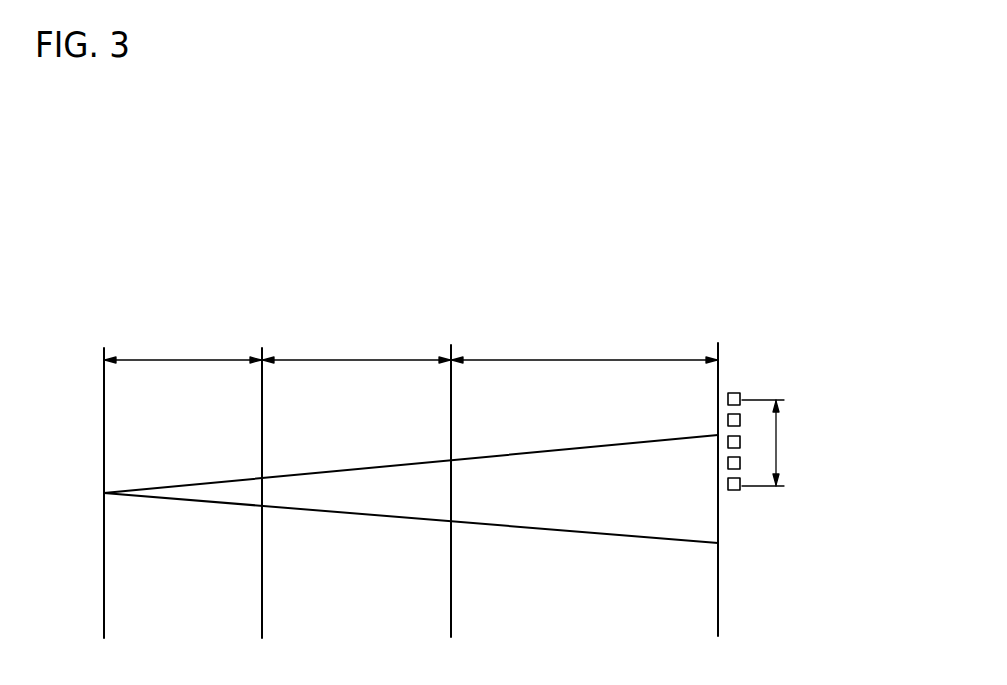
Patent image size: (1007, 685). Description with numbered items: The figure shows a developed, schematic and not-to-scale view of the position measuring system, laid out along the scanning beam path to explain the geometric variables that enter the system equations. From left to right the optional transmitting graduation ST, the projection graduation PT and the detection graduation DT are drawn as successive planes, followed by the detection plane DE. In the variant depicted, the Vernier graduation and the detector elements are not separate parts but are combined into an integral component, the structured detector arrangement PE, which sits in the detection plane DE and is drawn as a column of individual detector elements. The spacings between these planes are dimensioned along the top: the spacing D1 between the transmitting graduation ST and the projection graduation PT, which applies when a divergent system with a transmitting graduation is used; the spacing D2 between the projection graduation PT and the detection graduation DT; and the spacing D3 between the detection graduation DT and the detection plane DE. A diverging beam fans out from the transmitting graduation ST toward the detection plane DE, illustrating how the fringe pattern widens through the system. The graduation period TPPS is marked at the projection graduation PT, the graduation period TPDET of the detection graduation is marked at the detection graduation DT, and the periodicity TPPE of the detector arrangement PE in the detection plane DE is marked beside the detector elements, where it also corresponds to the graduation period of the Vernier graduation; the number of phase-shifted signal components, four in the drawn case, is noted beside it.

The transmitting graduation ST is at (104, 595).
The projection graduation PT is at (262, 594).
The detection graduation DT is at (451, 593).
The detection plane DE is at (718, 592).
The structured detector arrangement PE is at (745, 388).
The spacing between transmitting graduation and projection graduation D1 is at (183, 344).
The spacing between projection graduation and detection graduation D2 is at (356, 344).
The spacing between detection graduation and detection plane D3 is at (584, 344).
The beam width TP at PS TPPS is at (310, 582).
The graduation period of the detection graduation TPDET is at (504, 583).
The periodicity of the detector arrangement TPPE is at (821, 443).